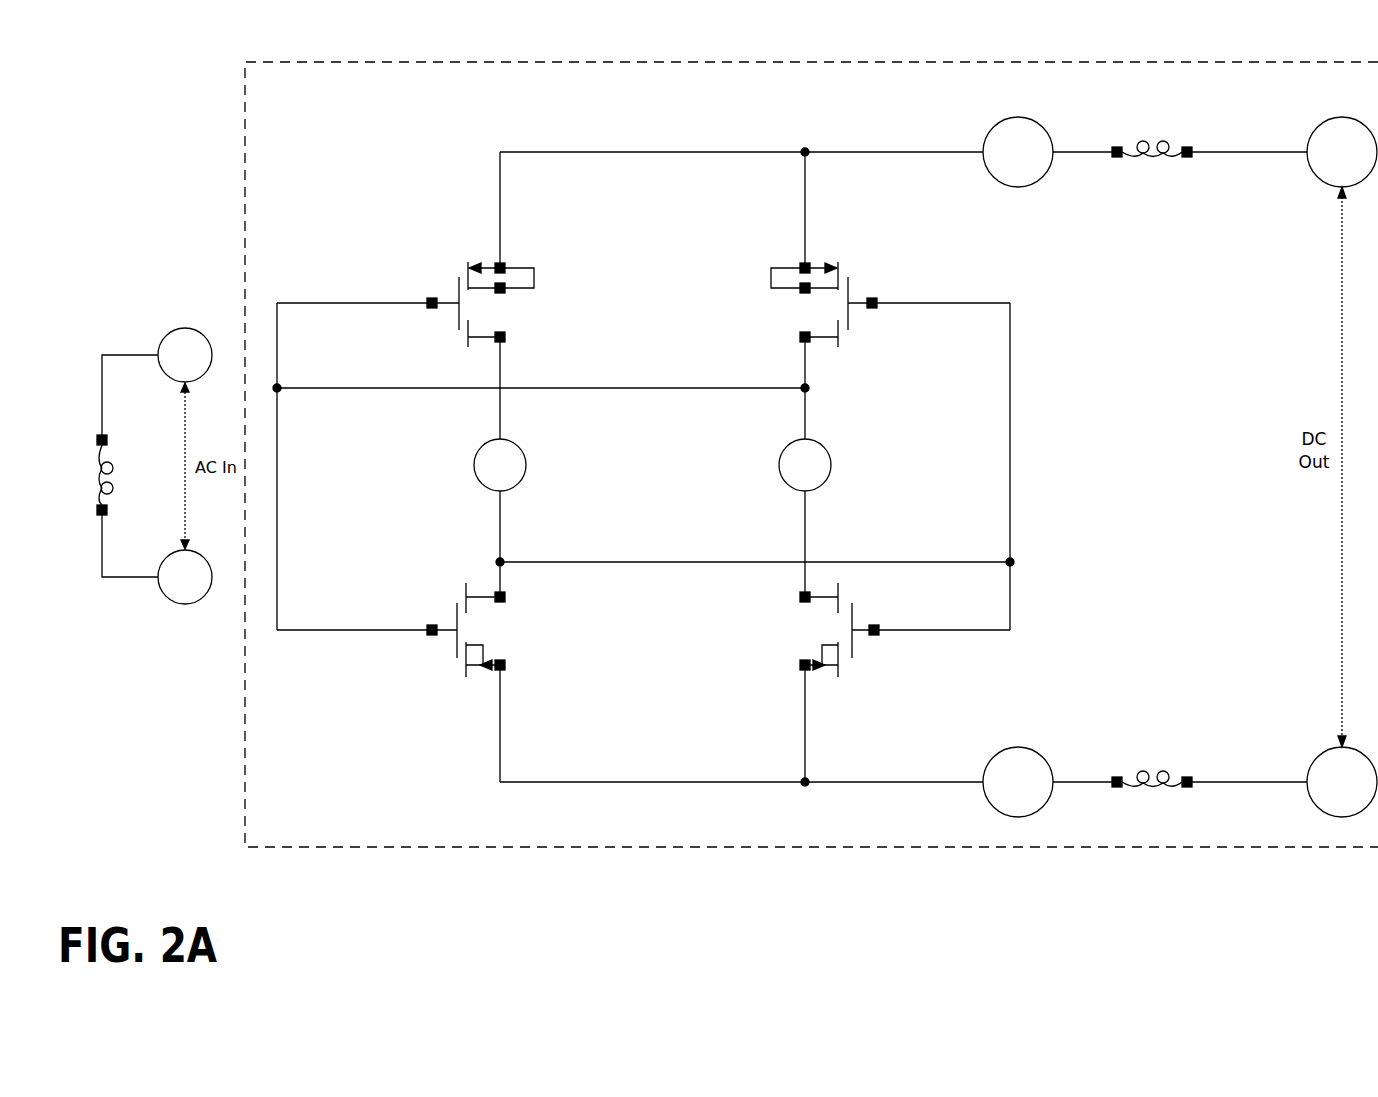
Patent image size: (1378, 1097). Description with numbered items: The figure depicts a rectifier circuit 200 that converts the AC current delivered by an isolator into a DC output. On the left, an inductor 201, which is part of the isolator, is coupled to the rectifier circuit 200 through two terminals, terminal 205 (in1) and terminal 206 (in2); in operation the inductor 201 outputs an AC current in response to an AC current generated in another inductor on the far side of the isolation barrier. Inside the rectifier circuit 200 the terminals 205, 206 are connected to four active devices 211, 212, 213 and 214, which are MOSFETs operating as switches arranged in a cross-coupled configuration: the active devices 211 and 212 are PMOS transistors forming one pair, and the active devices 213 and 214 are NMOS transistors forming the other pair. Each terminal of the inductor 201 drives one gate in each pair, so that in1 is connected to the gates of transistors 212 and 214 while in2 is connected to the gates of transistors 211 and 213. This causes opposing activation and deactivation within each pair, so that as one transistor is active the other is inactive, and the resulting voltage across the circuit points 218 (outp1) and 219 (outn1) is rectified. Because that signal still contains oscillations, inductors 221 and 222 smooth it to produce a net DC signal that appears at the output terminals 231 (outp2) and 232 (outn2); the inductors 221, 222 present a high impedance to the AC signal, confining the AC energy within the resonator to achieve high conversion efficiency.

The rectifier circuit 200 is at (243, 62).
The inductor 201 is at (104, 466).
The terminal 205 is at (168, 330).
The terminal 206 is at (168, 603).
The active device 211 is at (440, 270).
The active device 212 is at (903, 270).
The active device 213 is at (565, 640).
The active device 214 is at (783, 640).
The point of the circuit 218 is at (998, 122).
The point of the circuit 219 is at (998, 752).
The inductor 221 is at (1155, 124).
The inductor 222 is at (1155, 754).
The positive DC output terminal outp2 231 is at (1318, 122).
The negative DC output terminal outn2 232 is at (1318, 752).